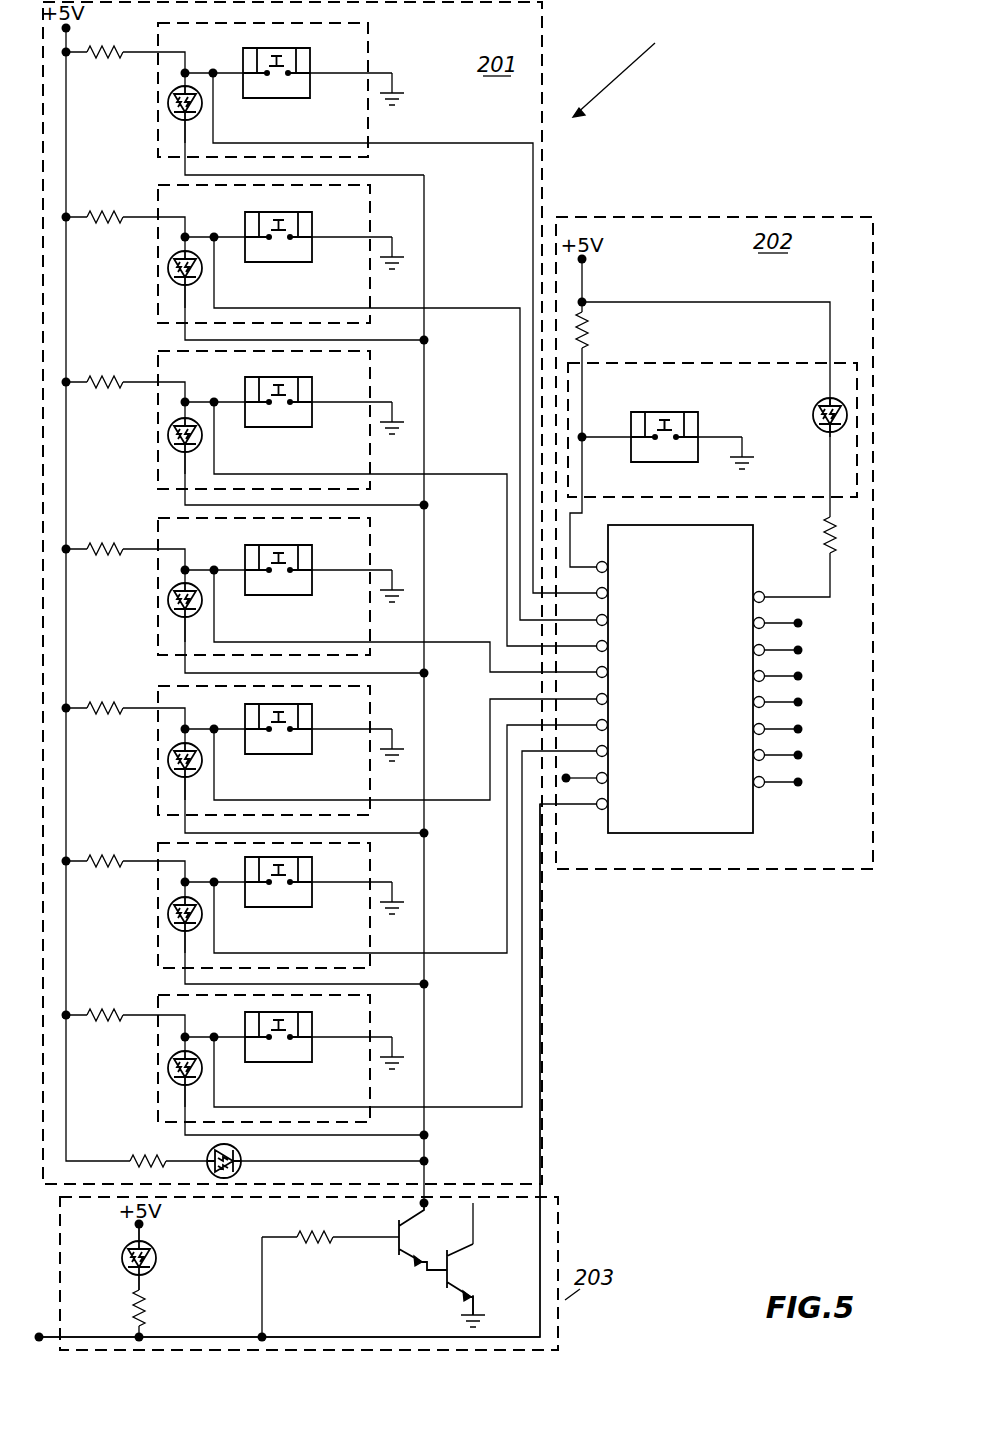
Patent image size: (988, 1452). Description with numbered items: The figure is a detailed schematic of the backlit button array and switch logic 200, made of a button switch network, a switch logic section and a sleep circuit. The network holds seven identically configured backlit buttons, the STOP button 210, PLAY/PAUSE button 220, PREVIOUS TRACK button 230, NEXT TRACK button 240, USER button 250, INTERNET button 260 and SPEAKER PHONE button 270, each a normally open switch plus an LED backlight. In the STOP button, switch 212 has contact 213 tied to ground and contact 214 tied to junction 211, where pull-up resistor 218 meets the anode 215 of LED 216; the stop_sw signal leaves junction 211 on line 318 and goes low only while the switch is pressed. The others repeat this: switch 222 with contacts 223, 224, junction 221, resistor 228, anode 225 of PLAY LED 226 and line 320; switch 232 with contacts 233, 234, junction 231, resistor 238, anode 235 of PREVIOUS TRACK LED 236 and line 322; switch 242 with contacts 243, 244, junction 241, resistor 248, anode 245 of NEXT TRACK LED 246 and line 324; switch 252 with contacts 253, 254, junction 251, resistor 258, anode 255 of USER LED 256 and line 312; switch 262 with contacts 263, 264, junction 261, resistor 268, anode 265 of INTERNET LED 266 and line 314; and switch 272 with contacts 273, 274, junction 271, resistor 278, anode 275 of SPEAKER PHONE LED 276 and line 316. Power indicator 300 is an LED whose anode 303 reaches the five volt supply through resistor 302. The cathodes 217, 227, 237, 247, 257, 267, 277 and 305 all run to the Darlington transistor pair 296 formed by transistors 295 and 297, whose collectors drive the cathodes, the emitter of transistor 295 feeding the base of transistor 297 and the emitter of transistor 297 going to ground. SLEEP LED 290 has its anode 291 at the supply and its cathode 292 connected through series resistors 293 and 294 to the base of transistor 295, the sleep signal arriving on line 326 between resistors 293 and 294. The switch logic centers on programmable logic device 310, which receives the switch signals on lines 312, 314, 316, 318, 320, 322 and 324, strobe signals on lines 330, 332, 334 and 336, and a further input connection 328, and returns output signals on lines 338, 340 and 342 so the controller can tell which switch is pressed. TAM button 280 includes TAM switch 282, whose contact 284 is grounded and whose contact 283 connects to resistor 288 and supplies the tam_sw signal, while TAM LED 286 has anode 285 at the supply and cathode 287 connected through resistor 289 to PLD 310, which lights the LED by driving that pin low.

The backlit button array and switch logic 200 is at (640, 68).
The user definable button 250 is at (370, 50).
The resistor 258 is at (122, 49).
The switch 252 is at (300, 98).
The contact 254 is at (262, 70).
The contact 253 is at (296, 70).
The junction 251 is at (214, 77).
The anode 255 is at (178, 85).
The USER LED 256 is at (168, 103).
The cathode 257 is at (180, 116).
The line 312 is at (448, 142).
The INTERNET button 260 is at (372, 215).
The resistor 268 is at (122, 214).
The switch 262 is at (300, 262).
The contact 264 is at (262, 234).
The contact 263 is at (298, 234).
The junction 261 is at (215, 241).
The anode 265 is at (178, 250).
The INTERNET LED 266 is at (168, 268).
The cathode 267 is at (180, 281).
The line 314 is at (448, 307).
The SPEAKER PHONE button 270 is at (372, 380).
The resistor 278 is at (122, 379).
The switch 272 is at (300, 427).
The contact 274 is at (262, 399).
The contact 273 is at (298, 399).
The junction 271 is at (215, 406).
The anode 275 is at (178, 417).
The SPEAKER PHONE LED 276 is at (168, 435).
The cathode 277 is at (180, 448).
The line 316 is at (448, 473).
The STOP button 210 is at (372, 548).
The resistor 218 is at (122, 546).
The STOP switch 212 is at (300, 595).
The contact 214 is at (262, 567).
The contact 213 is at (298, 567).
The junction 211 is at (215, 574).
The anode 215 is at (178, 583).
The indicator 216 is at (168, 600).
The cathode 217 is at (180, 613).
The line 318 is at (448, 641).
The PLAY/PAUSE button 220 is at (372, 708).
The resistor 228 is at (122, 705).
The switch 222 is at (300, 754).
The contact 224 is at (262, 726).
The contact 223 is at (298, 726).
The junction 221 is at (215, 733).
The anode 225 is at (178, 742).
The PLAY LED 226 is at (168, 760).
The cathode 227 is at (180, 773).
The line 320 is at (431, 800).
The PREVIOUS TRACK button 230 is at (372, 865).
The resistor 238 is at (122, 858).
The switch 232 is at (300, 907).
The contact 234 is at (262, 879).
The contact 233 is at (298, 879).
The junction 231 is at (215, 886).
The anode 235 is at (178, 896).
The PREVIOUS TRACK LED 236 is at (168, 914).
The cathode 237 is at (180, 927).
The line 322 is at (448, 952).
The NEXT TRACK button 240 is at (372, 1016).
The resistor 248 is at (122, 1012).
The switch 242 is at (300, 1062).
The contact 244 is at (262, 1034).
The contact 243 is at (298, 1034).
The junction 241 is at (215, 1041).
The anode 245 is at (178, 1050).
The NEXT TRACK LED 246 is at (168, 1068).
The cathode 247 is at (180, 1081).
The line 324 is at (448, 1106).
The resistor 302 is at (150, 1158).
The cathode 305 is at (238, 1152).
The anode 303 is at (213, 1150).
The power indicator 300 is at (232, 1170).
The SLEEP LED 290 is at (156, 1257).
The anode 291 is at (137, 1243).
The cathode 292 is at (137, 1274).
The resistor 293 is at (150, 1308).
The resistor 294 is at (322, 1243).
The transistor 295 is at (397, 1250).
The Darlington transistor pair 296 is at (493, 1232).
The transistor 297 is at (457, 1262).
The line 326 is at (383, 1337).
The TAM button 280 is at (727, 362).
The resistor 288 is at (585, 345).
The TAM switch 282 is at (664, 412).
The contact 283 is at (650, 433).
The contact 284 is at (682, 433).
The anode 285 is at (825, 402).
The TAM backlight 286 is at (813, 415).
The cathode 287 is at (823, 430).
The resistor 289 is at (825, 540).
The programmable logic device 310 is at (692, 834).
The input node 328 is at (566, 782).
The line 330 is at (802, 623).
The line 332 is at (802, 650).
The line 334 is at (802, 676).
The line 336 is at (802, 702).
The line 338 is at (802, 729).
The line 340 is at (802, 755).
The line 342 is at (802, 784).